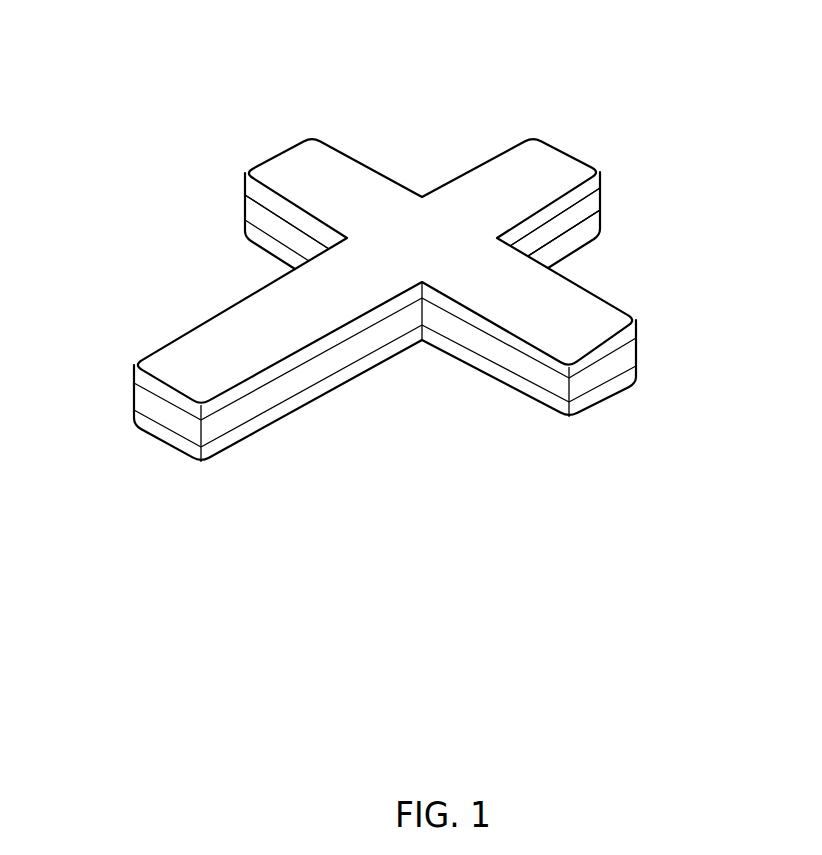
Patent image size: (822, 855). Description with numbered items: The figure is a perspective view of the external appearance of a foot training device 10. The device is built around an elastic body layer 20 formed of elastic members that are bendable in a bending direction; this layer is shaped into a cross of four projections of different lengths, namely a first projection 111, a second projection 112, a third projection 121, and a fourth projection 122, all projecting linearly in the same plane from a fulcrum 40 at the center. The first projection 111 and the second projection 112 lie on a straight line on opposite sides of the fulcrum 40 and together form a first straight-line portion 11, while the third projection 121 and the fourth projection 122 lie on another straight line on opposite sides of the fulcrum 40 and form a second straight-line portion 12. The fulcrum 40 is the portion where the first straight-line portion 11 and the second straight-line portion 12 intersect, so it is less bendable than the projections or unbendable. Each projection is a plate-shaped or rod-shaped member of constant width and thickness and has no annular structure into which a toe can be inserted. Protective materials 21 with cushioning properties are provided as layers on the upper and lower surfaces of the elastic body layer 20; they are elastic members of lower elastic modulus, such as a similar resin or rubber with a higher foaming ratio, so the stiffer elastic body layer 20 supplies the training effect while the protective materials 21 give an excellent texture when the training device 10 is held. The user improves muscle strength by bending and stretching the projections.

The training device 10 is at (73, 30).
The first straight-line portion 11 is at (543, 155).
The second straight-line portion 12 is at (323, 153).
The second projection 112 is at (462, 210).
The first projection 111 is at (240, 358).
The third projection 121 is at (578, 330).
The fourth projection 122 is at (287, 175).
The elastic body layer 20 is at (592, 212).
The protective materials 21 is at (595, 192).
The fulcrum 40 is at (427, 245).